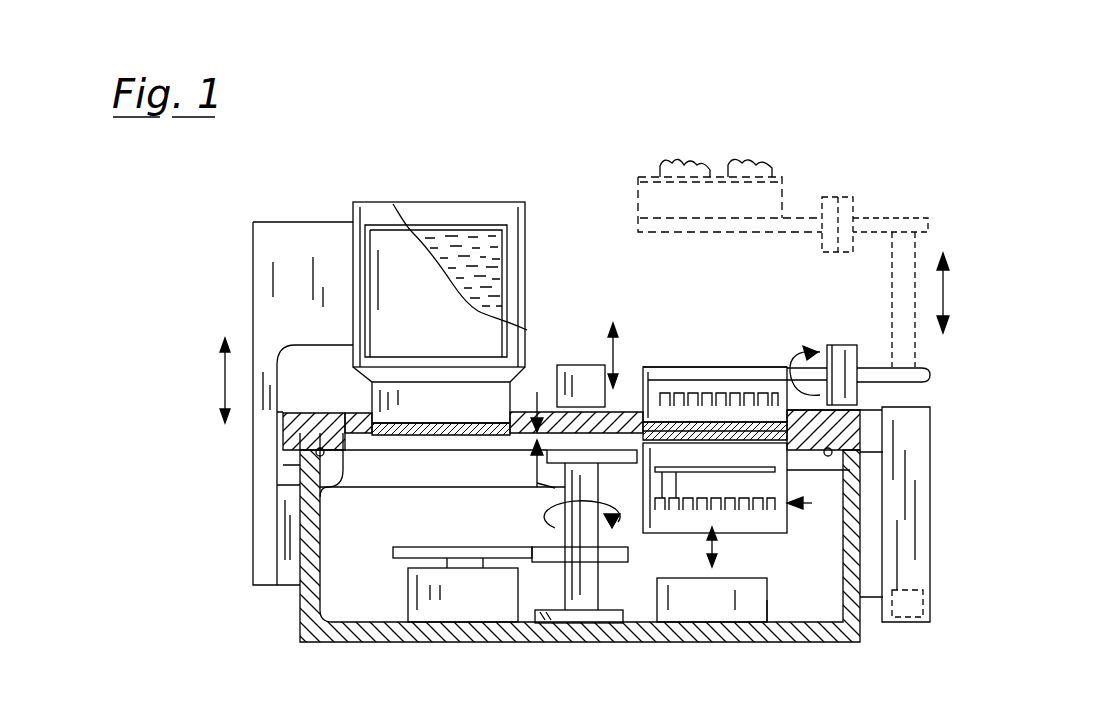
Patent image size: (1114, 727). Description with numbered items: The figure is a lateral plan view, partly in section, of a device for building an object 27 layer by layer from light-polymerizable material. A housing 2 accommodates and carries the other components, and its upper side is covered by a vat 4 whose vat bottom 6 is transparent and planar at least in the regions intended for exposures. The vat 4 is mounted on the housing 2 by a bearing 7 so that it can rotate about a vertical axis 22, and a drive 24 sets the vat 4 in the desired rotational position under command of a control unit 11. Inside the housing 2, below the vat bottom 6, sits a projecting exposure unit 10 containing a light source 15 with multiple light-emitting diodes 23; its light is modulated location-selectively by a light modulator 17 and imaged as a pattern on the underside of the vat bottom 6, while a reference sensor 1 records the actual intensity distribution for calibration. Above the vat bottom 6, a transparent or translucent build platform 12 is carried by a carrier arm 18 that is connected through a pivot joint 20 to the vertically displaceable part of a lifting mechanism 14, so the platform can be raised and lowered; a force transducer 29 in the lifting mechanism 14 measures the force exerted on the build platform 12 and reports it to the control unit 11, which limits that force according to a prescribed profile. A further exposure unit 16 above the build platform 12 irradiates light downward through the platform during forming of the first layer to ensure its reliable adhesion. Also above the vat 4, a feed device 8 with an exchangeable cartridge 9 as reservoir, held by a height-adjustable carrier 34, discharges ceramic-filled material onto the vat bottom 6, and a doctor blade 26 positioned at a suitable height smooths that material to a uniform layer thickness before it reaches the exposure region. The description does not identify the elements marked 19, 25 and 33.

The reference sensor 1 is at (740, 470).
The housing 2 is at (310, 575).
The vat 4 is at (287, 430).
The vat bottom 6 is at (790, 455).
The bearing 7 is at (330, 448).
The feed device 8 is at (527, 252).
The exchangeable cartridge 9 is at (460, 247).
The projecting exposure unit 10 is at (748, 455).
The control unit 11 is at (747, 607).
The build platform 12 is at (690, 418).
The lifting mechanism 14 is at (910, 593).
The light source 15 is at (777, 523).
The further exposure unit 16 is at (665, 383).
The light modulator 17 is at (790, 428).
The carrier arm 18 is at (745, 372).
The coupling 19 is at (740, 410).
The pivot joint 20 is at (857, 353).
The vertical axis 22 is at (582, 592).
The light-emitting diodes 23 is at (698, 512).
The drive 24 is at (488, 590).
The plate 25 is at (410, 553).
The doctor blade 26 is at (582, 383).
The object 27 is at (737, 160).
The force transducer 29 is at (935, 590).
The lifting movement 33 is at (537, 483).
The height-adjustable carrier 34 is at (283, 305).